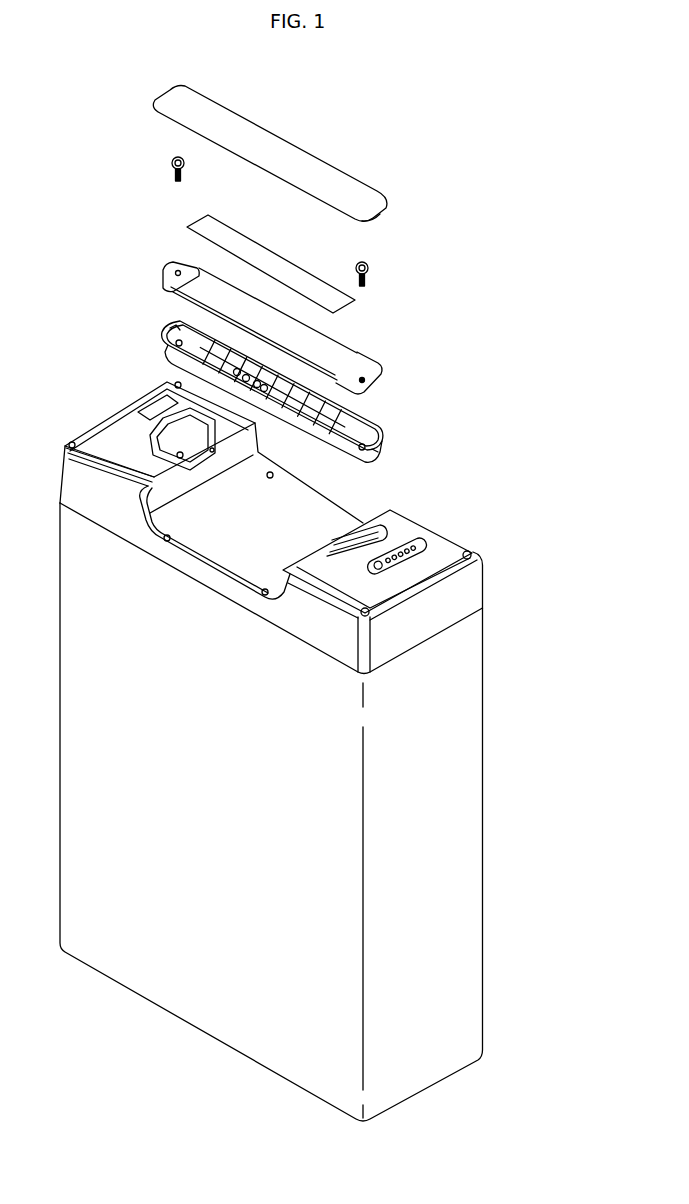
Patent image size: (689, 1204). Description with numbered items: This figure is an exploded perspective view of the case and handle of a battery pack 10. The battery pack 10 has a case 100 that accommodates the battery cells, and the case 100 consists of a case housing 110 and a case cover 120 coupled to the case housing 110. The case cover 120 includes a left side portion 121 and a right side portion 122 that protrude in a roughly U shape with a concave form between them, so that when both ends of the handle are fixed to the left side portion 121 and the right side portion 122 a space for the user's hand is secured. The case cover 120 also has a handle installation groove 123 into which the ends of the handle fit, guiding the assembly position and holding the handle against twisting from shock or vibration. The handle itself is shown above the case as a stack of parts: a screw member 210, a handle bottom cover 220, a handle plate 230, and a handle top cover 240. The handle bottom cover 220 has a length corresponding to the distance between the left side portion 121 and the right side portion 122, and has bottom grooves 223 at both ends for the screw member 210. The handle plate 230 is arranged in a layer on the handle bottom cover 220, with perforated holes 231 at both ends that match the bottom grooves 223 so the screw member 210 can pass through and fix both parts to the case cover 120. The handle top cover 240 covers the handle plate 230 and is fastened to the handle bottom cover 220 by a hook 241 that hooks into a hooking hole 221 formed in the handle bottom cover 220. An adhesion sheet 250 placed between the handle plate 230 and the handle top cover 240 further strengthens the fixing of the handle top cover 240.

The battery pack 10 is at (26, 99).
The case 100 is at (560, 565).
The case housing 110 is at (494, 803).
The case cover 120 is at (496, 585).
The left side portion 121 is at (97, 427).
The right side portion 122 is at (438, 533).
The handle installation groove 123 is at (179, 431).
The screw member 210 is at (161, 166).
The handle bottom cover 220 is at (384, 423).
The hooking hole 221 is at (172, 328).
The bottom groove 223 is at (173, 343).
The handle plate 230 is at (367, 348).
The perforated hole 231 is at (180, 273).
The handle top cover 240 is at (341, 159).
The hook 241 is at (380, 216).
The adhesion sheet 250 is at (277, 263).